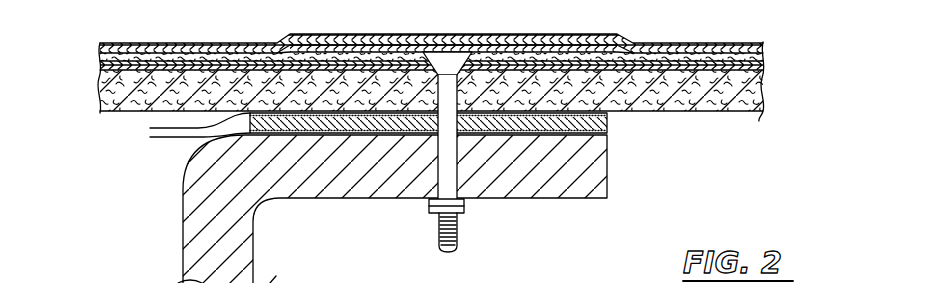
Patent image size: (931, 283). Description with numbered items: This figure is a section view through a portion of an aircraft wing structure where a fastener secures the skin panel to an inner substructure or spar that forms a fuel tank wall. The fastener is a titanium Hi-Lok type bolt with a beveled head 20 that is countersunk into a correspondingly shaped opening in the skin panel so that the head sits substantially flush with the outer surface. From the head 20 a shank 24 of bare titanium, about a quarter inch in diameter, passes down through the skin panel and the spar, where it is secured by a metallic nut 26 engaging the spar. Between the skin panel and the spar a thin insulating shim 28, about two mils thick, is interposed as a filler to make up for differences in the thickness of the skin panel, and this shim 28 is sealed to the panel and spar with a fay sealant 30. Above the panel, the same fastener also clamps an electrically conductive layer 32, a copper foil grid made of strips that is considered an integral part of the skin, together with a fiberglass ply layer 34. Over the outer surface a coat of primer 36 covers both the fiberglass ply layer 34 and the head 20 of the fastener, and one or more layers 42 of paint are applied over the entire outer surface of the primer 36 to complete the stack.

The beveled head 20 is at (562, 135).
The shank 24 is at (452, 155).
The metallic nut 26 is at (433, 215).
The shim 28 is at (607, 118).
The fay sealant 30 is at (150, 129).
The electrically conductive layer 32 is at (263, 53).
The fiberglass ply layer 34 is at (100, 90).
The primer 36 is at (98, 58).
The layers of paint 42 is at (100, 47).